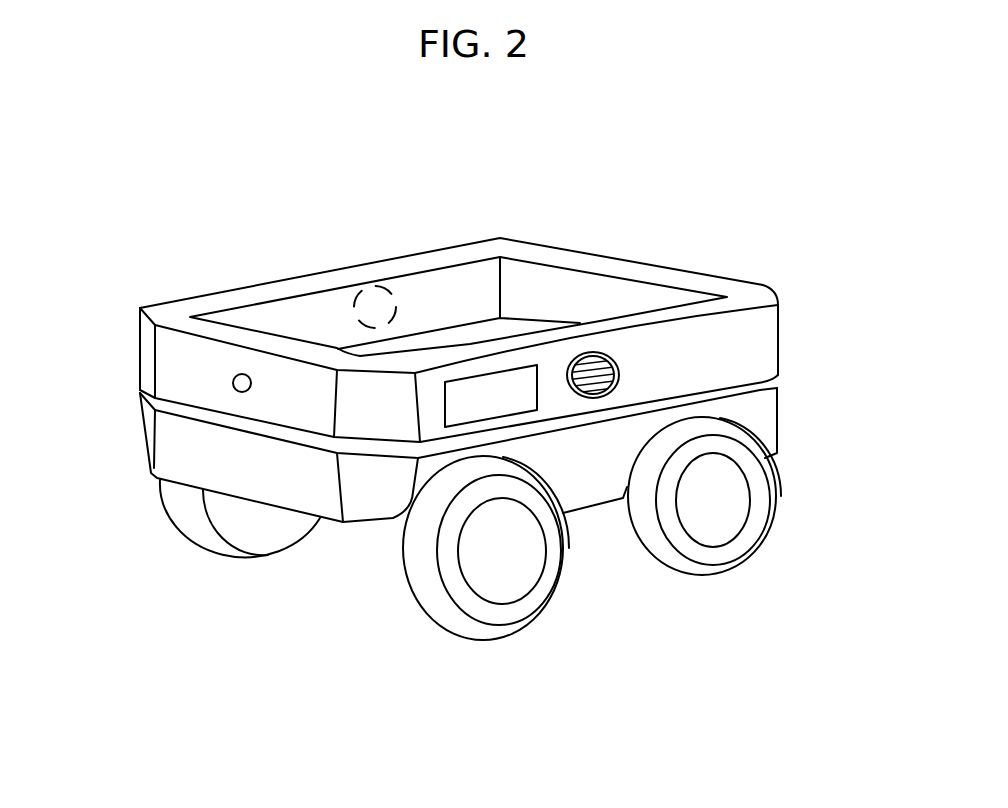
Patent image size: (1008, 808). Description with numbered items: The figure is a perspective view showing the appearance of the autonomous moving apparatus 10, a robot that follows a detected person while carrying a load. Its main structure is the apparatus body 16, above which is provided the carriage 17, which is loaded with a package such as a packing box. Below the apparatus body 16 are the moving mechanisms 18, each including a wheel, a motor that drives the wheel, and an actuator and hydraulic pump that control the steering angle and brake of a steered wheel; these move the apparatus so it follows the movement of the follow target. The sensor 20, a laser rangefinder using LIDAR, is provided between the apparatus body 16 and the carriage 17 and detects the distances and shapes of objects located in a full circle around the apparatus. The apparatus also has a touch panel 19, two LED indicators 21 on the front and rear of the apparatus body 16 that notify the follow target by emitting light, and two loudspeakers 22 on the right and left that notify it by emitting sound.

The autonomous moving apparatus 10 is at (721, 245).
The apparatus body 16 is at (777, 422).
The carriage 17 is at (777, 333).
The moving mechanisms 18 is at (216, 539).
The touch panel 19 is at (483, 376).
The sensor 20 is at (610, 413).
The LED indicators 21 is at (233, 381).
The loudspeakers 22 is at (593, 350).